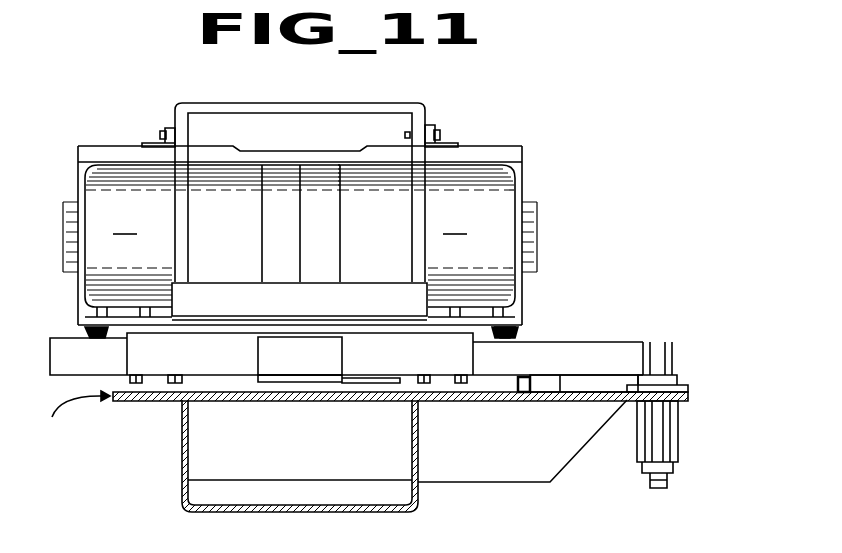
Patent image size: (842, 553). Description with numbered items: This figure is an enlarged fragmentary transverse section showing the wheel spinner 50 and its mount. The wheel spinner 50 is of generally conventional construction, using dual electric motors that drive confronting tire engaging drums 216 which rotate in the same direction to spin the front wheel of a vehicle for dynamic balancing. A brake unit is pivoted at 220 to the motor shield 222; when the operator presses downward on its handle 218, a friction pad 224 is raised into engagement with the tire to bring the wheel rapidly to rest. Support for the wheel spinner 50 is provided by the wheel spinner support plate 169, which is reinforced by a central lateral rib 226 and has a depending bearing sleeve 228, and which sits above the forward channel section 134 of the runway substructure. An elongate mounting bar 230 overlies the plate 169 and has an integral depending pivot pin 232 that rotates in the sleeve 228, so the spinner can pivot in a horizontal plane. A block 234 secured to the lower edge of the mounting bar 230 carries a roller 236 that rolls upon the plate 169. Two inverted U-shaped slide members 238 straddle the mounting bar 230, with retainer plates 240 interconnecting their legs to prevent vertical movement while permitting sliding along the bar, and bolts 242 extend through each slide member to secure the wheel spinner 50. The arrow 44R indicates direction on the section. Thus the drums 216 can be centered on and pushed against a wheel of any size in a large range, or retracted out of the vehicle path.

The wheel spinner 50 is at (487, 170).
The motor shield 222 is at (522, 157).
The tire engaging drums 216 is at (320, 165).
The handle 218 is at (255, 103).
The pivot 220 is at (167, 135).
The friction pad 224 is at (325, 311).
The mounting bar 230 is at (548, 343).
The slide members 238 is at (345, 355).
The retainer plates 240 is at (253, 378).
The bolts 242 is at (192, 374).
The roller 236 is at (530, 391).
The block 234 is at (565, 378).
The pivot pin 232 is at (672, 354).
The wheel spinner support plate 169 is at (153, 398).
The bearing sleeve 228 is at (679, 432).
The lateral rib 226 is at (502, 463).
The channel section 134 is at (182, 467).
The direction arrow 44R is at (74, 416).